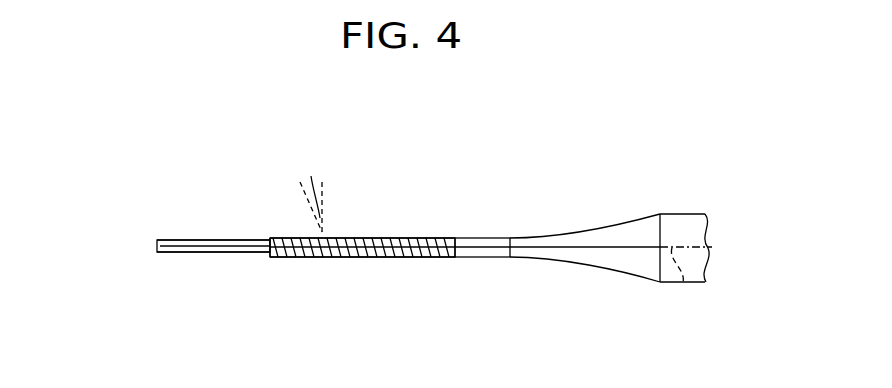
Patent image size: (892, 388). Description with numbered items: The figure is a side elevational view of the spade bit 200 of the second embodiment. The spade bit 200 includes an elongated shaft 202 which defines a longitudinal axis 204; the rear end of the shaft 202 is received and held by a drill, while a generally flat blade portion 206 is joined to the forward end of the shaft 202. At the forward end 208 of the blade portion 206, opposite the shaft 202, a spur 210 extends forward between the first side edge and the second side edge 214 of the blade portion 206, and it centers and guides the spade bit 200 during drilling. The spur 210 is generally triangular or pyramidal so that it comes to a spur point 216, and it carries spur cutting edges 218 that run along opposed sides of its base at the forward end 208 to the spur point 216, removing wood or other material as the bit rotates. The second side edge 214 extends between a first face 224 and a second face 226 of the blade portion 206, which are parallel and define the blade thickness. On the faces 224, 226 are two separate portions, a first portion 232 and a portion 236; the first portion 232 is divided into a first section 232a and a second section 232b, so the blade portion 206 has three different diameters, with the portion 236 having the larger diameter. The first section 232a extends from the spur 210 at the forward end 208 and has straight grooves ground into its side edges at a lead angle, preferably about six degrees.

The spade bit 200 is at (414, 230).
The elongated shaft 202 is at (678, 220).
The longitudinal axis 204 is at (683, 283).
The blade portion 206 is at (452, 196).
The forward end of the blade portion 208 is at (268, 238).
The spur 210 is at (213, 254).
The second side edge 214 is at (294, 257).
The spur point 216 is at (157, 246).
The spur cutting edges 218 is at (182, 245).
The first face 224 is at (370, 240).
The second face 226 is at (344, 257).
The first portion 232 is at (446, 230).
The first section of the first portion 232a is at (355, 156).
The second section of the first portion 232b is at (452, 156).
The portion 236 is at (498, 201).